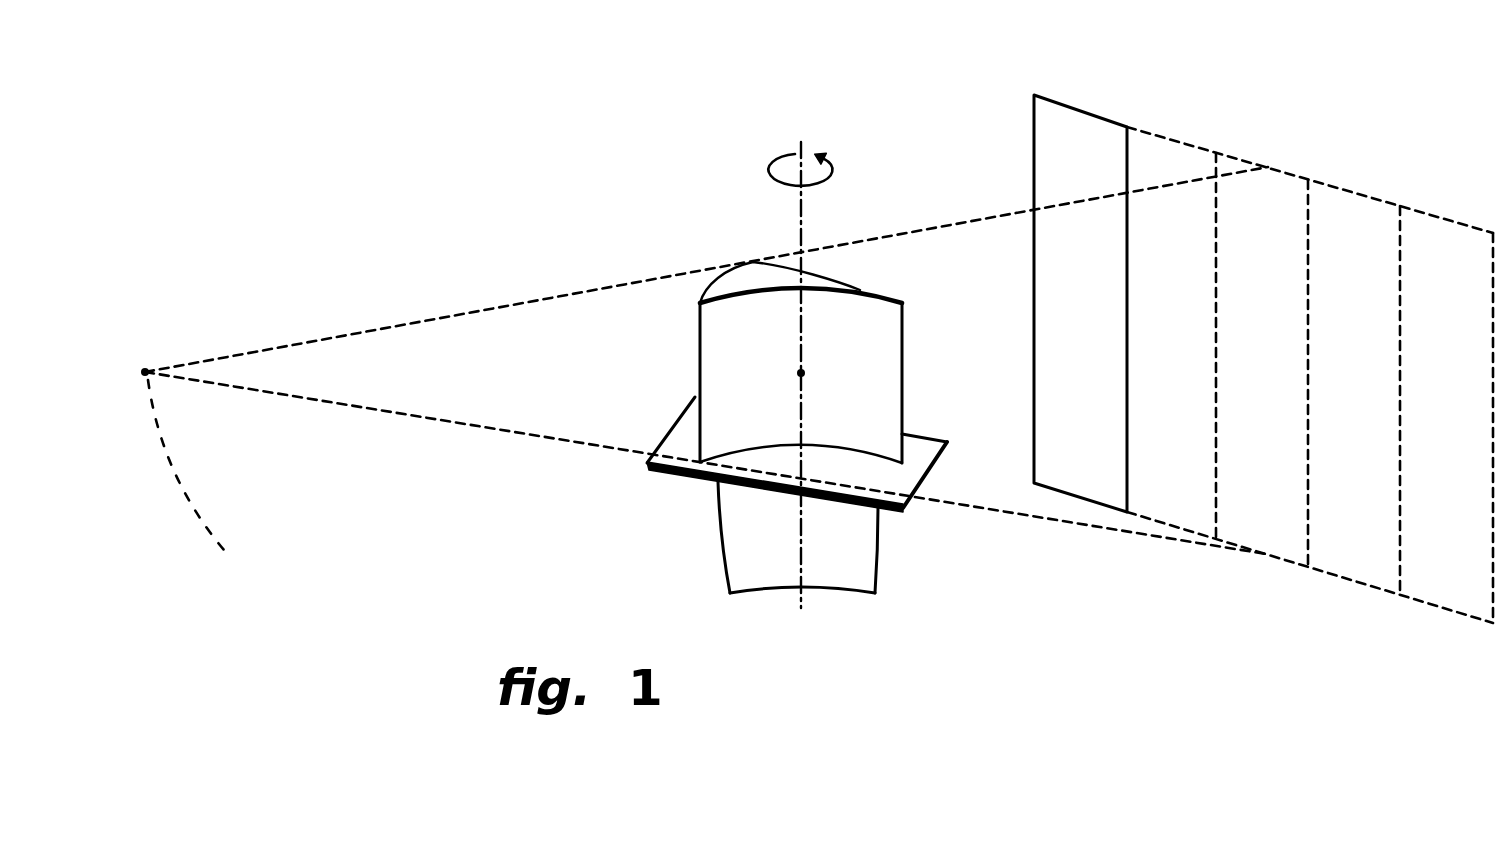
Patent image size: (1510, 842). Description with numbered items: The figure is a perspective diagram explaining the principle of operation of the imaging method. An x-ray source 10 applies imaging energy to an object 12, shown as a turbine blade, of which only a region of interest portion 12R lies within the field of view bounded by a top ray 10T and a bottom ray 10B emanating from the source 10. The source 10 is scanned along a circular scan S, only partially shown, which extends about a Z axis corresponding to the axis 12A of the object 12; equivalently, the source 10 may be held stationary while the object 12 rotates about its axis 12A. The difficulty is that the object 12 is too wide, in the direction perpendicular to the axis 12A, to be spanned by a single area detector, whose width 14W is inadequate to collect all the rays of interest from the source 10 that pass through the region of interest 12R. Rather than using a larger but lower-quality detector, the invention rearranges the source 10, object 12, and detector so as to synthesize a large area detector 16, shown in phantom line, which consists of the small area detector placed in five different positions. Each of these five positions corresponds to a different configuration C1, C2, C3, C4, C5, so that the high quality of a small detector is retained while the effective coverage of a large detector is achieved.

The x-ray source 10 is at (125, 425).
The top ray 10T is at (458, 317).
The bottom ray 10B is at (583, 443).
The object 12 is at (843, 309).
The axis of object 12A is at (800, 240).
The region of interest portion 12R is at (903, 392).
The width of area detector 14W is at (1036, 514).
The large area detector 16 is at (1310, 215).
The circular scan S is at (210, 535).
The Z axis Z is at (797, 166).
The configuration C1 is at (1060, 103).
The configuration C2 is at (1158, 158).
The configuration C3 is at (1275, 166).
The configuration C4 is at (1343, 580).
The configuration C5 is at (1432, 217).